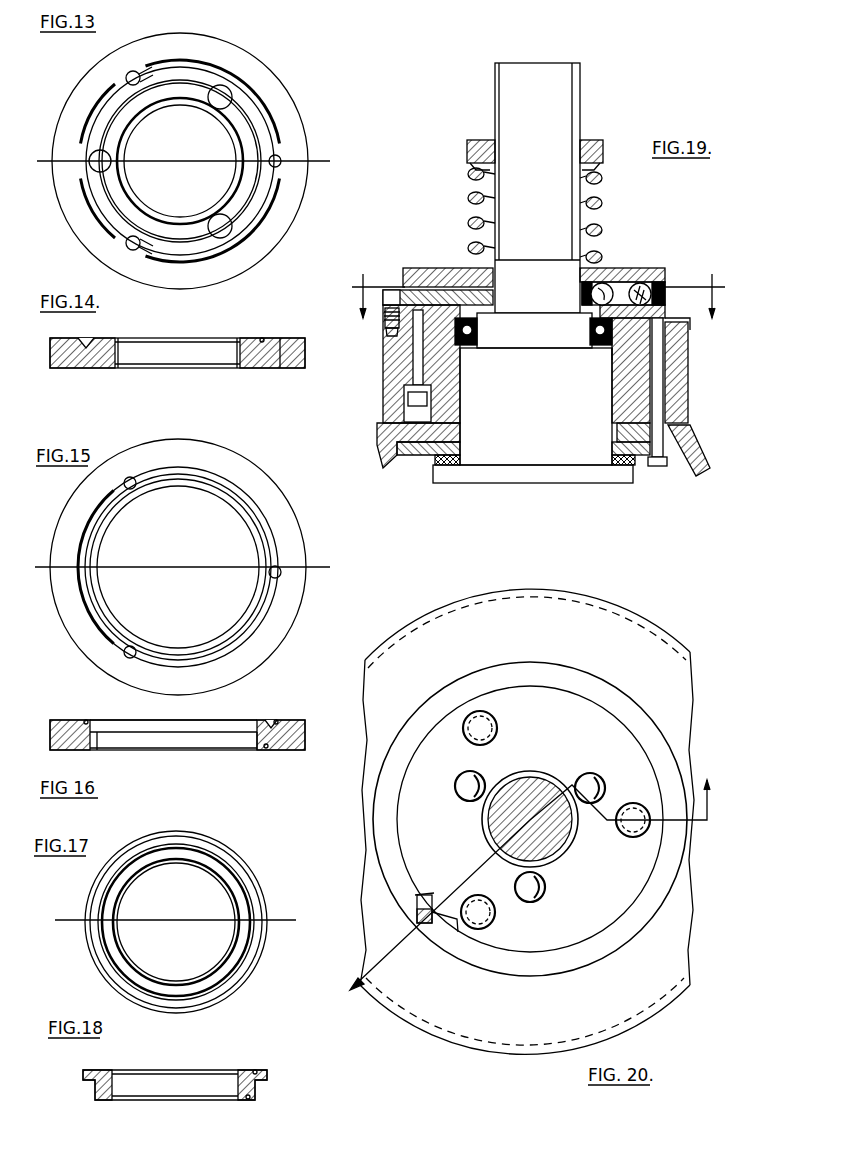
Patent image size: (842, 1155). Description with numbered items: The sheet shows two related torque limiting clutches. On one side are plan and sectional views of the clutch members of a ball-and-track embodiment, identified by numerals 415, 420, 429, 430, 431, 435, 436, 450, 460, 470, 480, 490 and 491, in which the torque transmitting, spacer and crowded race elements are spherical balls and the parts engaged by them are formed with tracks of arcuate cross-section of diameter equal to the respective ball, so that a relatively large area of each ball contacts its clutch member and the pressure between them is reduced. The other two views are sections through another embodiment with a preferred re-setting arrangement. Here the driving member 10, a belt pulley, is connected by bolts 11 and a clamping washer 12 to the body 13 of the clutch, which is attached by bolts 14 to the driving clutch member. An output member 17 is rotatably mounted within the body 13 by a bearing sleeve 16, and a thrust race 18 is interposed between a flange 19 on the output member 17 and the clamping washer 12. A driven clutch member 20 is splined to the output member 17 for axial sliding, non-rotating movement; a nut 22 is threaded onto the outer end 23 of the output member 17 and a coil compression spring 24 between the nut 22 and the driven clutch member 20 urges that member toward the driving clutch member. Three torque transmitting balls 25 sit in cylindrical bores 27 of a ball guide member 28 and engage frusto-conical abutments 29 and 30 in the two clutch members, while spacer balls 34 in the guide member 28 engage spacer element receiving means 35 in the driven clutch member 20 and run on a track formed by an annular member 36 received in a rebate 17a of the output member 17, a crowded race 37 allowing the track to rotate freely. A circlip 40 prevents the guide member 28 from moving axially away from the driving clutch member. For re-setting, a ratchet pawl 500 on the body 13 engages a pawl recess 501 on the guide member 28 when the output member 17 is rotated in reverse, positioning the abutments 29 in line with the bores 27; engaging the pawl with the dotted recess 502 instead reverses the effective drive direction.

In FIG. 19, the driving member 10 is at (378, 438).
In FIG. 19, the bolts 11 is at (660, 462).
In FIG. 19, the clamping washer 12 is at (640, 458).
In FIG. 19, the body 13 is at (676, 378).
In FIG. 20, the body 13 is at (657, 750).
In FIG. 13, the bolts 14 is at (37, 161).
In FIG. 19, the bolts 14 is at (424, 355).
In FIG. 15, the bearing sleeve 16 is at (35, 567).
In FIG. 19, the bearing sleeve 16 is at (462, 395).
In FIG. 19, the output member 17 is at (536, 406).
In FIG. 19, the rebate 17a is at (606, 356).
In FIG. 17, the thrust race 18 is at (55, 920).
In FIG. 19, the thrust race 18 is at (435, 462).
In FIG. 19, the flange 19 is at (625, 474).
In FIG. 20, the flange 19 is at (527, 871).
In FIG. 19, the driven clutch member 20 is at (435, 268).
In FIG. 19, the nut 22 is at (592, 142).
In FIG. 19, the outer end 23 is at (582, 100).
In FIG. 19, the coil compression spring 24 is at (600, 198).
In FIG. 19, the balls 25 is at (642, 283).
In FIG. 20, the balls 25 is at (480, 712).
In FIG. 19, the cylindrical bores 27 is at (688, 318).
In FIG. 20, the cylindrical bores 27 is at (490, 712).
In FIG. 19, the ball guide member 28 is at (660, 282).
In FIG. 20, the ball guide member 28 is at (636, 750).
In FIG. 19, the torque transmitting abutments 29 is at (664, 350).
In FIG. 20, the torque transmitting abutments 29 is at (468, 712).
In FIG. 19, the torque transmitting abutments 30 is at (640, 270).
In FIG. 19, the spacer elements 34 is at (606, 282).
In FIG. 20, the spacer elements 34 is at (476, 781).
In FIG. 19, the spacer element receiving means 35 is at (600, 282).
In FIG. 19, the annular member 36 is at (590, 322).
In FIG. 19, the crowded race 37 is at (474, 328).
In FIG. 19, the circlip 40 is at (493, 288).
In FIG. 15, the ring 415 is at (272, 488).
In FIG. 16, the ring 415 is at (300, 740).
In FIG. 13, the ring 420 is at (292, 205).
In FIG. 15, the pin 429 is at (279, 578).
In FIG. 16, the pin 429 is at (278, 718).
In FIG. 13, the ball 430 is at (136, 70).
In FIG. 14, the ball 430 is at (280, 345).
In FIG. 13, the groove 431 is at (268, 98).
In FIG. 13, the ball 435 is at (222, 104).
In FIG. 14, the ball 435 is at (103, 336).
In FIG. 17, the ring 436 is at (262, 945).
In FIG. 18, the ring 436 is at (270, 1075).
In FIG. 13, the groove 450 is at (136, 100).
In FIG. 14, the groove 450 is at (262, 336).
In FIG. 13, the ball 460 is at (281, 152).
In FIG. 14, the ball 460 is at (275, 338).
In FIG. 15, the arc segment 470 is at (86, 600).
In FIG. 16, the arc segment 470 is at (80, 718).
In FIG. 16, the pin 480 is at (268, 750).
In FIG. 17, the ring flange 490 is at (234, 860).
In FIG. 18, the ring flange 490 is at (258, 1068).
In FIG. 18, the ring lip 491 is at (247, 1102).
In FIG. 19, the ratchet pawl 500 is at (395, 305).
In FIG. 20, the ratchet pawl 500 is at (416, 898).
In FIG. 19, the pawl recess 501 is at (398, 300).
In FIG. 20, the pawl recess 501 is at (492, 832).
In FIG. 20, the recess 502 is at (444, 926).